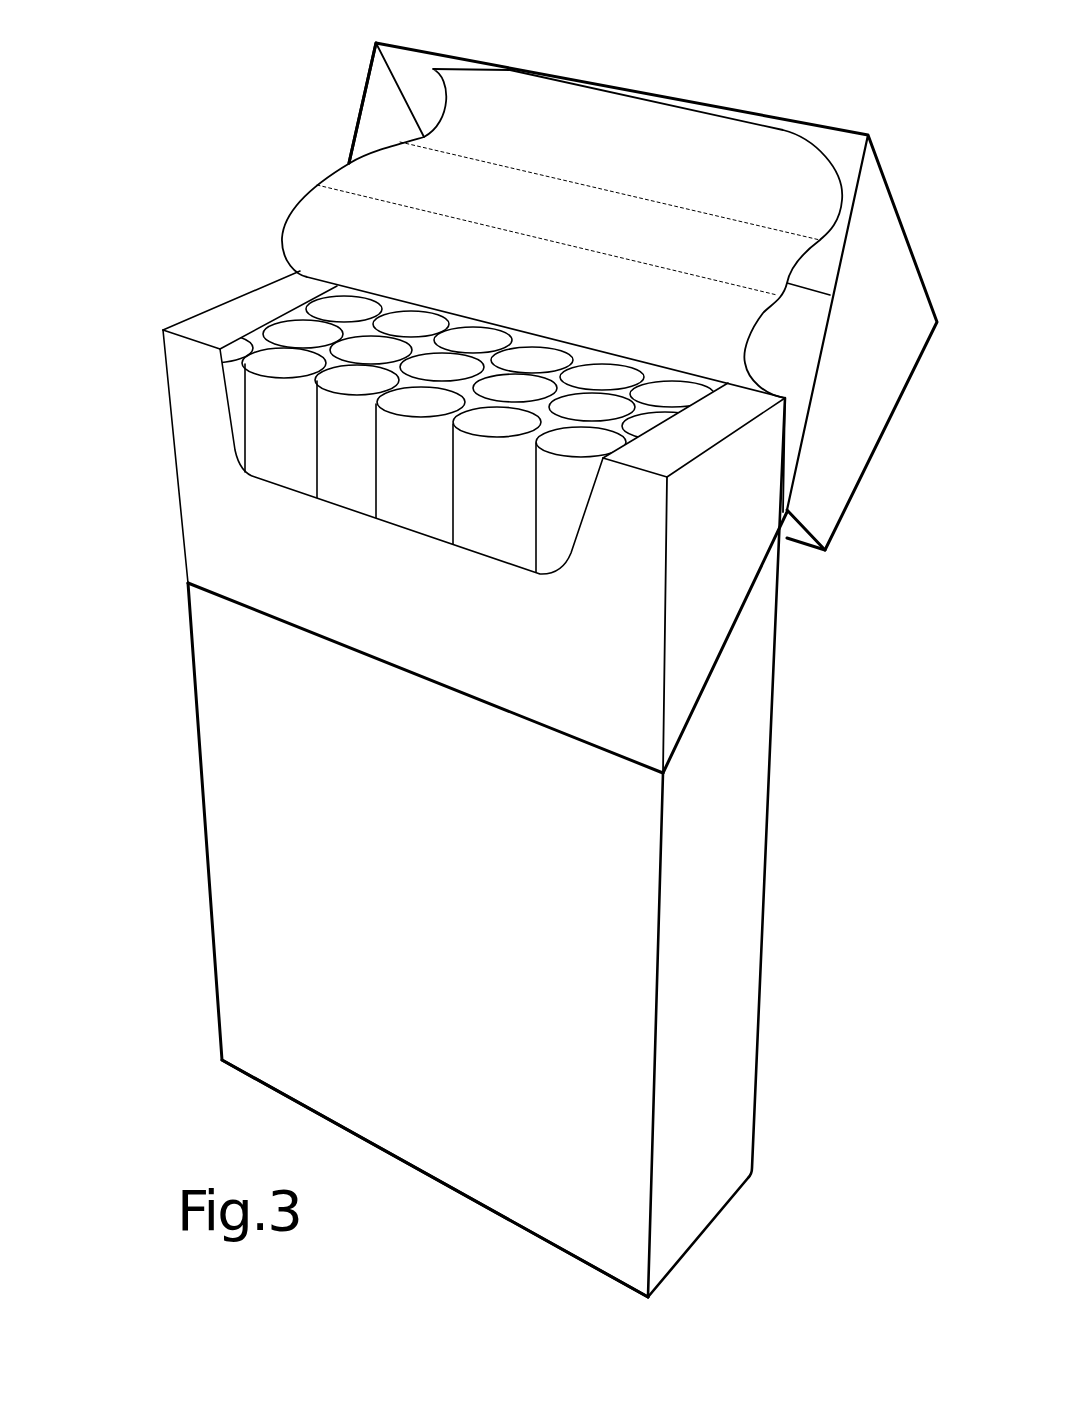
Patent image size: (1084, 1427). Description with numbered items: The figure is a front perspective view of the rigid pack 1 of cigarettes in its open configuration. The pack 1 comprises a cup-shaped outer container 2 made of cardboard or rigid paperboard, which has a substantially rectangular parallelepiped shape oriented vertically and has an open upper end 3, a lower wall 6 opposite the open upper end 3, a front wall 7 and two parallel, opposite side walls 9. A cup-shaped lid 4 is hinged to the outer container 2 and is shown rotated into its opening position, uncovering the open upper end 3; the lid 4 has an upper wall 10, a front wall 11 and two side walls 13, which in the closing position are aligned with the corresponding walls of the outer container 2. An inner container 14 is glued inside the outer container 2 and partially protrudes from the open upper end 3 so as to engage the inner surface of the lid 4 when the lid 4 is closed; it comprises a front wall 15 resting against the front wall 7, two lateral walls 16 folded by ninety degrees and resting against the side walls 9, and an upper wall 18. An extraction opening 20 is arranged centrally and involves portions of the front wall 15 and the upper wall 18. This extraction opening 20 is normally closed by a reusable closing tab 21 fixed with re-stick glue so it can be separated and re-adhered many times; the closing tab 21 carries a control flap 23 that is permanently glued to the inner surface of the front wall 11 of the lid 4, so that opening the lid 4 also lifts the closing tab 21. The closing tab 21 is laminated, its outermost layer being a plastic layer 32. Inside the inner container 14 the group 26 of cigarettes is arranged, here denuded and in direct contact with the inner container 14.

The rigid pack of cigarettes 1 is at (148, 1070).
The outer container 2 is at (147, 868).
The open upper end 3 is at (513, 268).
The lid 4 is at (327, 85).
The lower wall 6 is at (413, 1168).
The front wall 7 is at (436, 937).
The side walls 9 is at (703, 960).
The upper wall 10 is at (773, 355).
The front wall 11 is at (395, 88).
The side walls 13 is at (371, 132).
The inner container 14 is at (147, 523).
The front wall 15 is at (394, 613).
The lateral walls 16 is at (698, 533).
The upper wall 18 is at (239, 325).
The extraction opening 20 is at (370, 510).
The reusable closing tab 21 is at (270, 153).
The control flap 23 is at (570, 117).
The group of cigarettes 26 is at (513, 502).
The plastic layer 32 is at (746, 495).